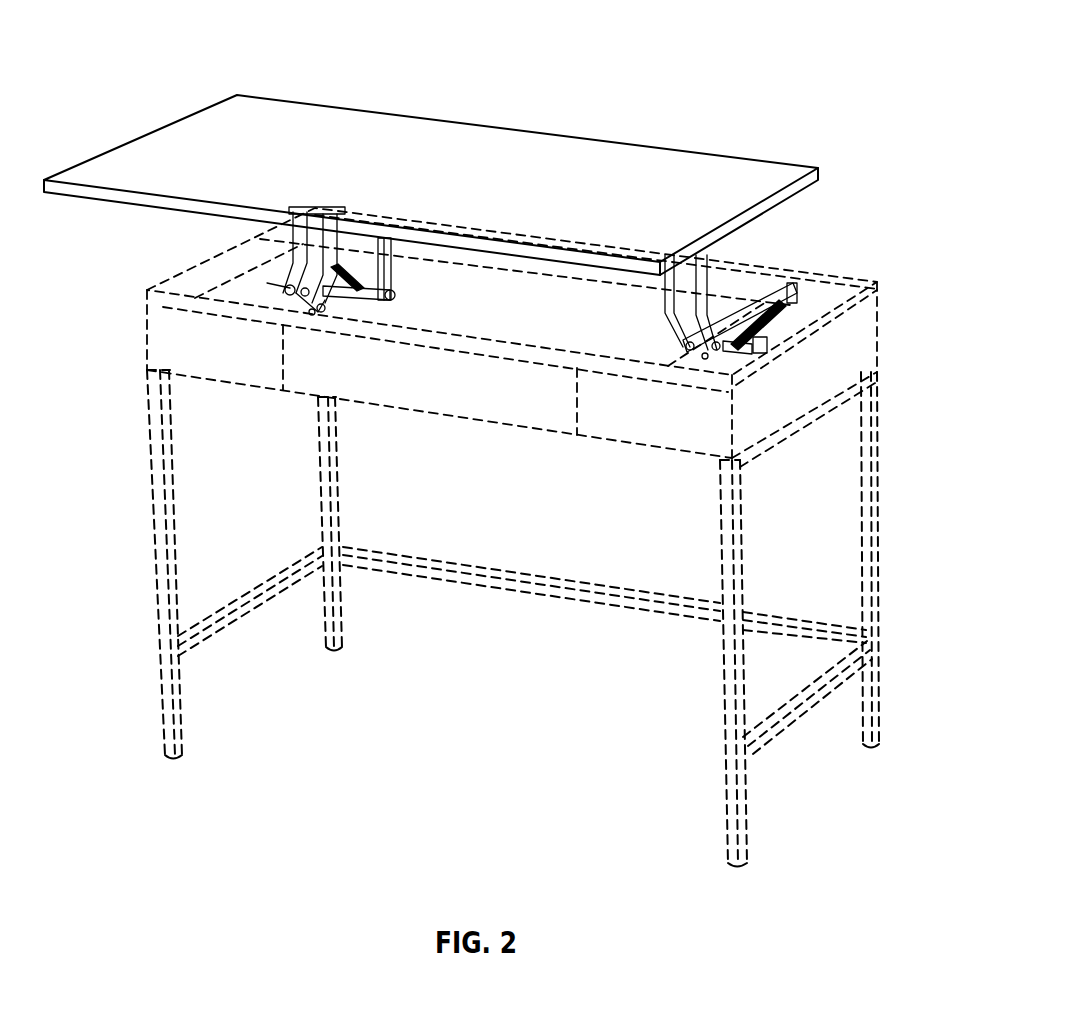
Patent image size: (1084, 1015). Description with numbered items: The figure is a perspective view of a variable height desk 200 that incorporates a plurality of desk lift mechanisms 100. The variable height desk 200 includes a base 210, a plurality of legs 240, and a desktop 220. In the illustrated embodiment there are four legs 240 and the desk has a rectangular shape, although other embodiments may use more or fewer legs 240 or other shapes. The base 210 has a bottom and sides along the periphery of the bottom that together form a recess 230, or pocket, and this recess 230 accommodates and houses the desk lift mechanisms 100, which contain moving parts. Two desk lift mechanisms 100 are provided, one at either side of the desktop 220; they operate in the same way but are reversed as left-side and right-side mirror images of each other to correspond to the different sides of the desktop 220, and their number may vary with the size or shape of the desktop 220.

The variable height desk 200 is at (796, 34).
The desktop 220 is at (745, 171).
The recess 230 is at (474, 296).
The base 210 is at (863, 330).
The legs 240 is at (157, 596).
The desk lift mechanism 100 is at (292, 283).